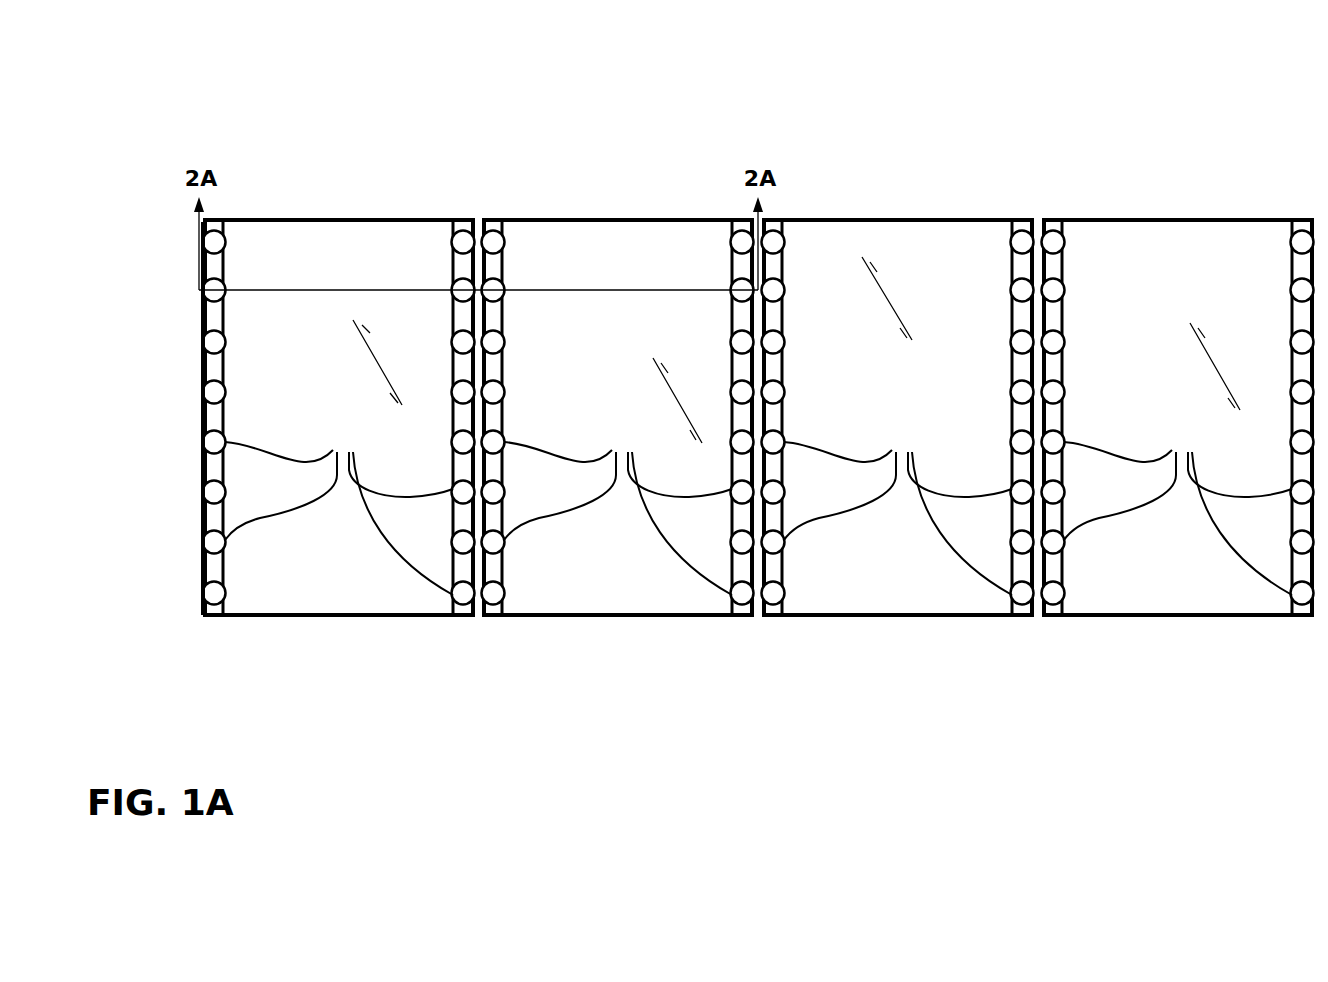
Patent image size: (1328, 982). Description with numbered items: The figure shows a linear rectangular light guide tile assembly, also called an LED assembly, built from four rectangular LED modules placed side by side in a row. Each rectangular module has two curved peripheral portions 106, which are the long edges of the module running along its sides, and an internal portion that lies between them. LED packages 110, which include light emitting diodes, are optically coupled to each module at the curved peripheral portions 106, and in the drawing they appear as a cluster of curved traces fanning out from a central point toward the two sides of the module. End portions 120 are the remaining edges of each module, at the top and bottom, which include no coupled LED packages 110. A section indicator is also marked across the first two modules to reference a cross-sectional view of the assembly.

The curved peripheral portion 106 is at (203, 408).
The LED package 110 is at (758, 506).
The end portion 120 is at (392, 650).